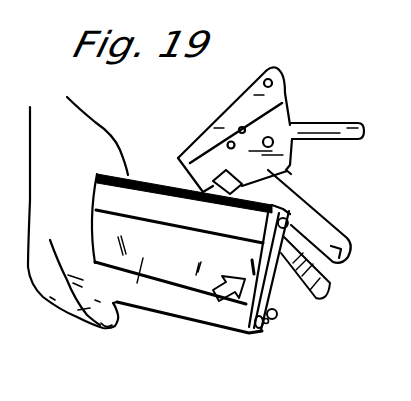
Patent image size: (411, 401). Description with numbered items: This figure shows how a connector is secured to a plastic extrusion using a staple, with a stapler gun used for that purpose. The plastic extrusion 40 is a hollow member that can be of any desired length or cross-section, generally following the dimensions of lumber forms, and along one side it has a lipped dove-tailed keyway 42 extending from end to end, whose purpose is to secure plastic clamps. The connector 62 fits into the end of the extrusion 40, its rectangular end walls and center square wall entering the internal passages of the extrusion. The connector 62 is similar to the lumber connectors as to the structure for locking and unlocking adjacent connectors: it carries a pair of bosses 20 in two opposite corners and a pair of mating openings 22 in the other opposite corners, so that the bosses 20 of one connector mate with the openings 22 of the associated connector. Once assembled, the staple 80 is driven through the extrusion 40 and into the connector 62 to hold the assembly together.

The plastic extrusion 40 is at (147, 200).
The lipped dove-tailed keyway 42 is at (145, 255).
The staple 80 is at (250, 262).
The mating openings 22 is at (259, 329).
The bosses 20 is at (277, 318).
The connector 62 is at (268, 283).